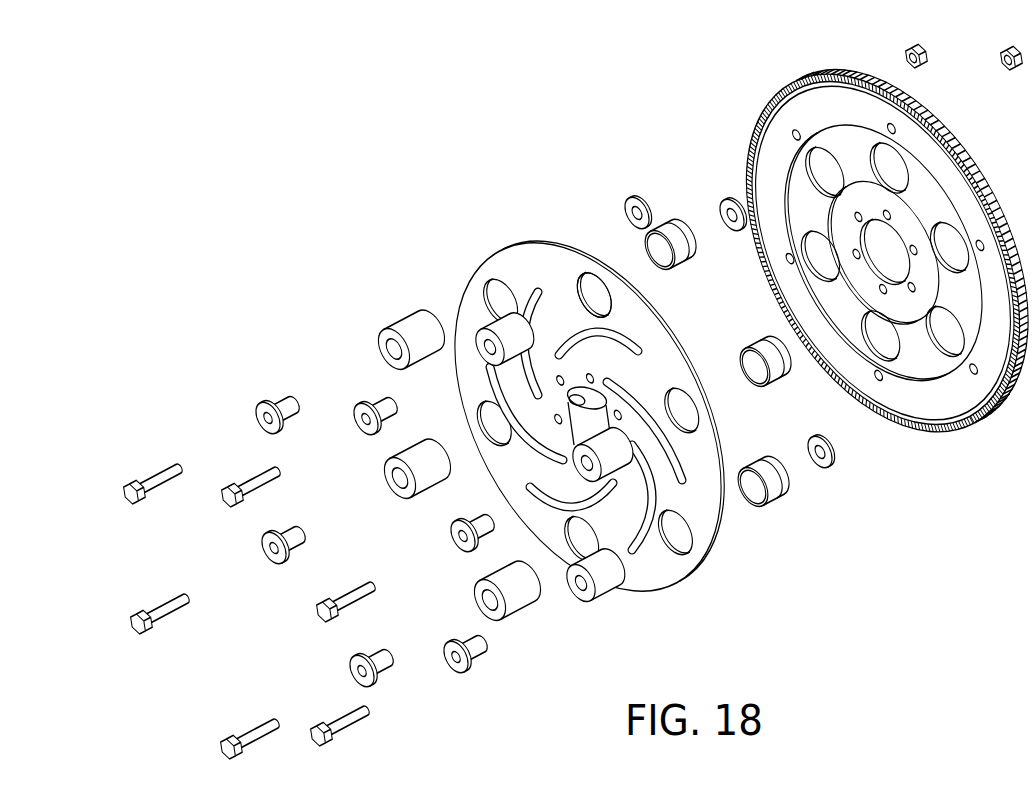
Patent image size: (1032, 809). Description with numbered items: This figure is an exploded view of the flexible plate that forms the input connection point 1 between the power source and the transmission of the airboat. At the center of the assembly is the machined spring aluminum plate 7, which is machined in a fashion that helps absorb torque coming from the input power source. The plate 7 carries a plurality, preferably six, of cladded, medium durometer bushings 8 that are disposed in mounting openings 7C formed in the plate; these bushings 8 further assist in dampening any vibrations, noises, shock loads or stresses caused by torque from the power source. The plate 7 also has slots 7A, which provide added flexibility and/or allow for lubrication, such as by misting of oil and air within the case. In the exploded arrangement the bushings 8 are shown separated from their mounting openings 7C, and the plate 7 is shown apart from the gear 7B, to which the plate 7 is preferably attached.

The input connection point 1 is at (713, 330).
The machined spring aluminum plate 7 is at (587, 383).
The slots 7A is at (523, 282).
The gear 7B is at (812, 113).
The mounting openings 7C is at (577, 303).
The cladded, medium durometer bushings 8 is at (378, 317).